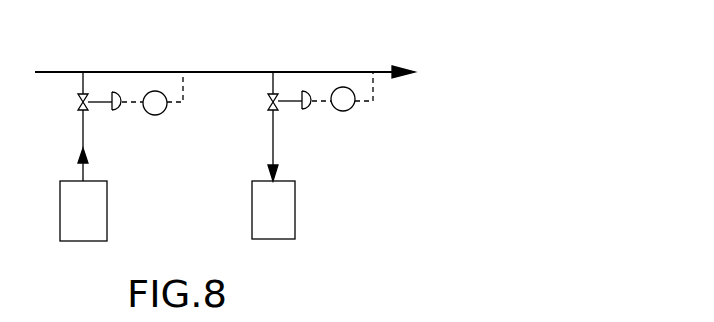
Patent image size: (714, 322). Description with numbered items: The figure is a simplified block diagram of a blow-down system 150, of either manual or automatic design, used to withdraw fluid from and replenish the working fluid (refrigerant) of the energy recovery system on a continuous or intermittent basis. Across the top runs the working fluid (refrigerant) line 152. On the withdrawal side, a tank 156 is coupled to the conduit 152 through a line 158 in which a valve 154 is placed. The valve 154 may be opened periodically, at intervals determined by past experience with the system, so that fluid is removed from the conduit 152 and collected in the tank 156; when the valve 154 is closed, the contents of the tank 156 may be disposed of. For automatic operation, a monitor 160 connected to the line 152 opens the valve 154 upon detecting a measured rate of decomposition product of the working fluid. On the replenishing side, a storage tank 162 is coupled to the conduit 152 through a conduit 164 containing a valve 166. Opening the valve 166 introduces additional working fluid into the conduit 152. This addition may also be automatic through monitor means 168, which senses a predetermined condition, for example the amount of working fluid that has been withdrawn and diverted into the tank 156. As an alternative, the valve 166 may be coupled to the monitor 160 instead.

The blow-down system 150 is at (290, 33).
The working fluid (refrigerant) line 152 is at (334, 72).
The valve 154 is at (306, 109).
The tank 156 is at (295, 205).
The line 158 is at (268, 95).
The monitor 160 is at (354, 104).
The storage tank 162 is at (107, 200).
The conduit 164 is at (83, 140).
The valve 166 is at (115, 108).
The monitor means 168 is at (165, 112).